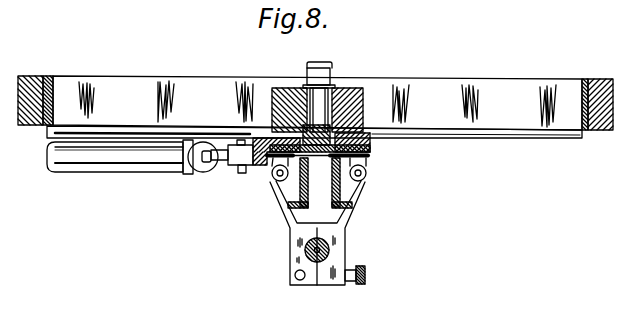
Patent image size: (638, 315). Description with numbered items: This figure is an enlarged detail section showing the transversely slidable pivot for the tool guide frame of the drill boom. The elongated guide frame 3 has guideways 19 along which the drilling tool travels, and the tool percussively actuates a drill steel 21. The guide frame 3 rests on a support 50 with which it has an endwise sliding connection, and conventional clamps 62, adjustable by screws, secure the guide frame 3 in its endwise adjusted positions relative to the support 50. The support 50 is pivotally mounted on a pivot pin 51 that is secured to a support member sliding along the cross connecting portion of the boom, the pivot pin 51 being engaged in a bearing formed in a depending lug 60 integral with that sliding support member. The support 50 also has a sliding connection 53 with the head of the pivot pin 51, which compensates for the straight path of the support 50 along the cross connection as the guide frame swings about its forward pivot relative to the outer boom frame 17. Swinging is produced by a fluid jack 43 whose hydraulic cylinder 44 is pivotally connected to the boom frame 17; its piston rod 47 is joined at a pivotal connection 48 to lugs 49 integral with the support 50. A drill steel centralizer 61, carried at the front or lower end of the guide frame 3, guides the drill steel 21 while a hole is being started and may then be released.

The guide frame 3 is at (340, 192).
The outer boom frame 17 is at (600, 130).
The guideways 19 is at (270, 166).
The drill steel 21 is at (305, 249).
The fluid jack 43 is at (87, 172).
The hydraulic cylinder 44 is at (148, 168).
The piston rod 47 is at (220, 148).
The pivotal connection 48 is at (240, 170).
The lugs 49 is at (258, 140).
The support 50 is at (378, 147).
The pivot pin 51 is at (322, 115).
The sliding connection 53 is at (380, 127).
The depending lug 60 is at (372, 88).
The drill steel centralizer 61 is at (346, 256).
The clamps 62 is at (312, 177).